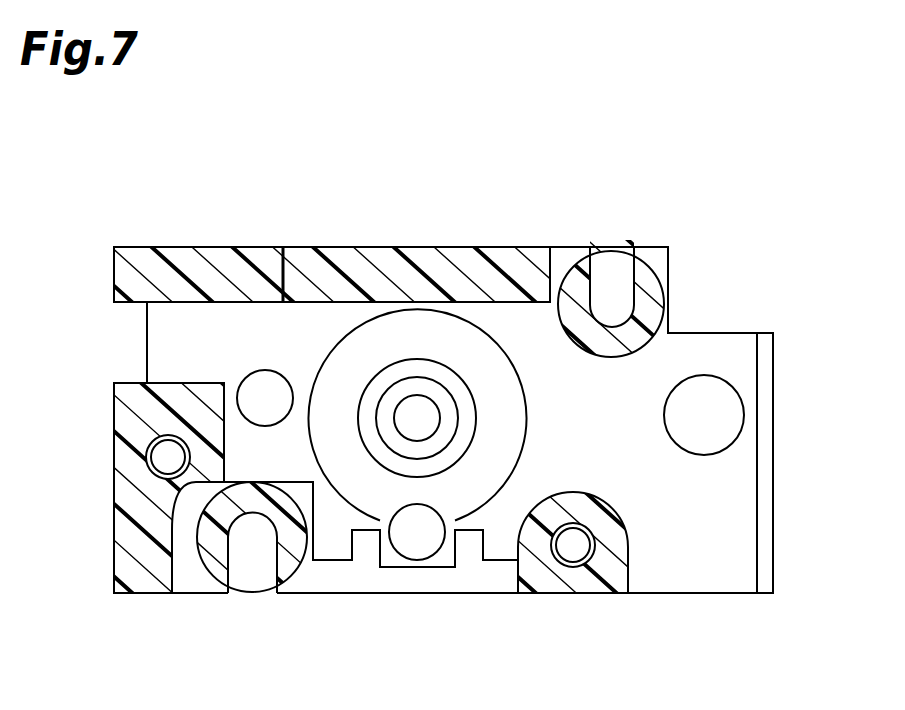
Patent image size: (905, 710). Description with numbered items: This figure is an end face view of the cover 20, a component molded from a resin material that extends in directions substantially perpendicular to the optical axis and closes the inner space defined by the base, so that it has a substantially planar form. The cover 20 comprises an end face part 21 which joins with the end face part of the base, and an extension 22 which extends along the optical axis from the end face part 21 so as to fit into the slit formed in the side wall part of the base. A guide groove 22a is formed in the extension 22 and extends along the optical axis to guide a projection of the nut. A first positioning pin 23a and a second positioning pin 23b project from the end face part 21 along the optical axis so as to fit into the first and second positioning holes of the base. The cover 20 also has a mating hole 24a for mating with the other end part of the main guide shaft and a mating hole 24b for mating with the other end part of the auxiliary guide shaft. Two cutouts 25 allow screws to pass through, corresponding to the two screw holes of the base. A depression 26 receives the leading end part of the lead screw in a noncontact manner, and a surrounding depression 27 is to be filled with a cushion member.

The cover 20 is at (465, 240).
The end face part 21 is at (358, 260).
The extension 22 is at (366, 582).
The guide groove 22a is at (443, 562).
The first positioning pin 23a is at (575, 558).
The second positioning pin 23b is at (162, 456).
The mating hole 24a is at (736, 402).
The mating hole 24b is at (250, 376).
The cutouts 25 is at (598, 300).
The depression 26 is at (422, 418).
The depression 27 is at (503, 443).